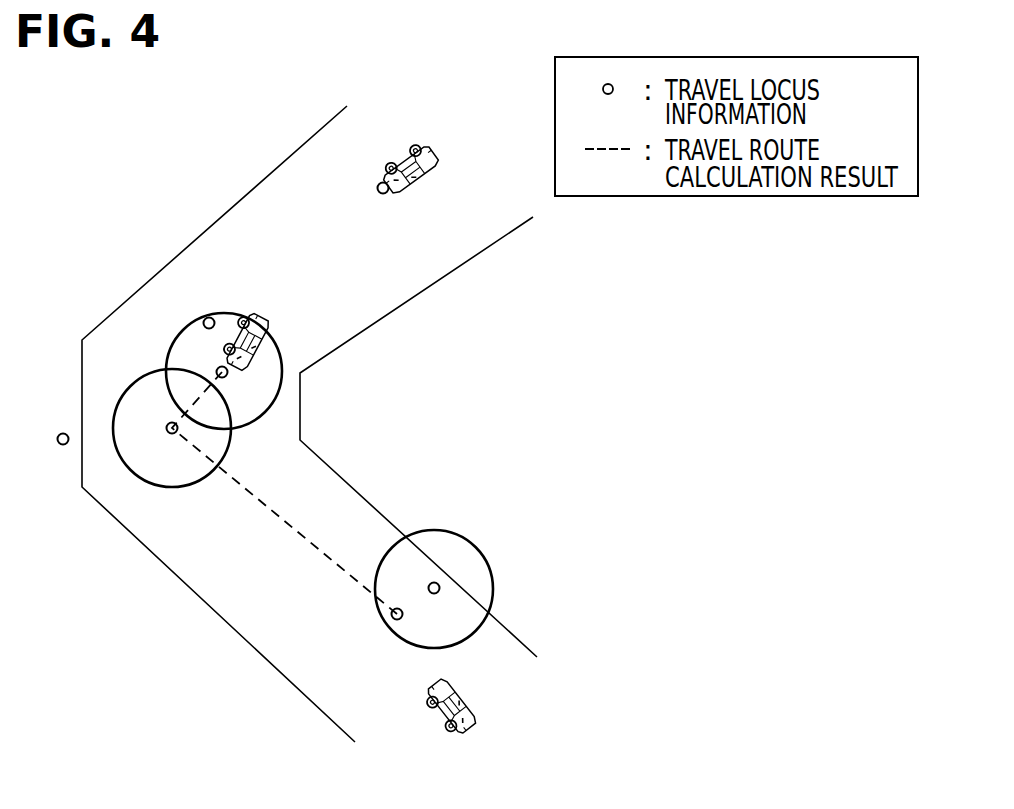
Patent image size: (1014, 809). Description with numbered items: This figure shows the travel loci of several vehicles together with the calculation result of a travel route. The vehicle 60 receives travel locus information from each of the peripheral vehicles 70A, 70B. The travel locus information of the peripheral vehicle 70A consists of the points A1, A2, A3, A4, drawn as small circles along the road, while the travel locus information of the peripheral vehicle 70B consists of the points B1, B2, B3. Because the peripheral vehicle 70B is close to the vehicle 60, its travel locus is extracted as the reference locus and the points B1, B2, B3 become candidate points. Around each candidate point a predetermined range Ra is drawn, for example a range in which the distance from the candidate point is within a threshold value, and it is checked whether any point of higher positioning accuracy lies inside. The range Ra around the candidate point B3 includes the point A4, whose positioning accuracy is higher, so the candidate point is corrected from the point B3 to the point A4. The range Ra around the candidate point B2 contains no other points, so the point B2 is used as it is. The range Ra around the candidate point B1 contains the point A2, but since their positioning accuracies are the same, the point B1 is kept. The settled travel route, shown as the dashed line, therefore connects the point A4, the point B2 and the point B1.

The peripheral vehicle 70A is at (437, 174).
The peripheral vehicle 70B is at (258, 318).
The vehicle 60 is at (474, 698).
The predetermined range Ra is at (283, 386).
The point A1 is at (398, 204).
The point A2 is at (203, 307).
The point A3 is at (61, 423).
The point A4 is at (417, 627).
The point B1 is at (210, 359).
The point B2 is at (155, 416).
The point B3 is at (454, 604).